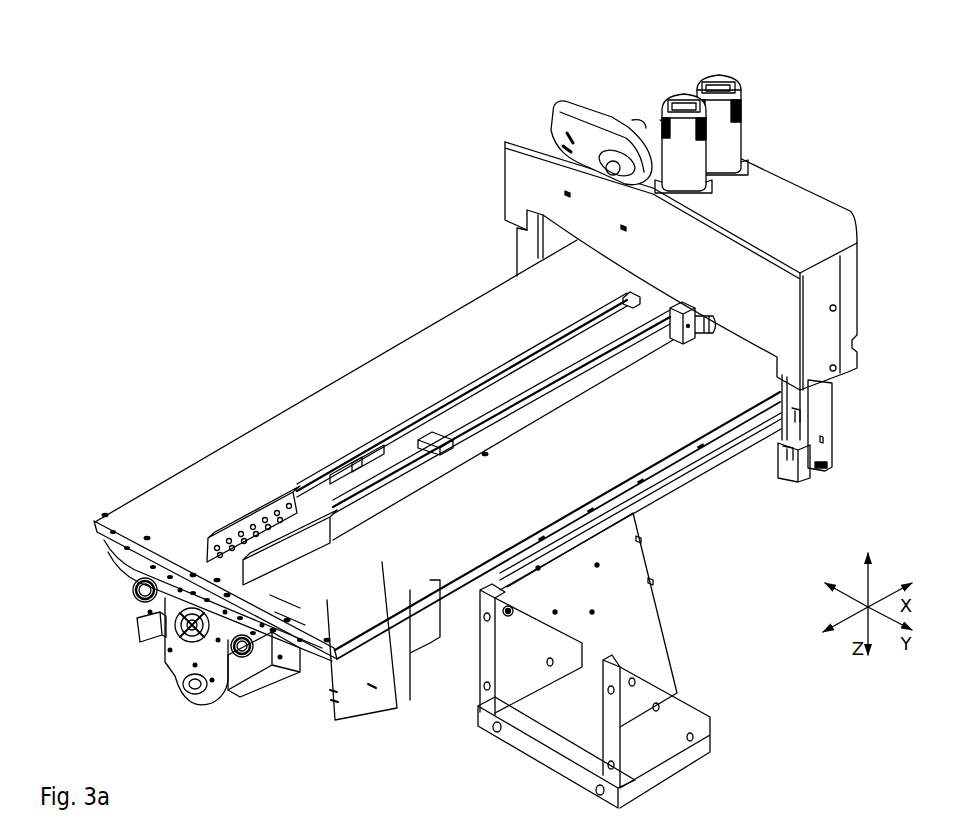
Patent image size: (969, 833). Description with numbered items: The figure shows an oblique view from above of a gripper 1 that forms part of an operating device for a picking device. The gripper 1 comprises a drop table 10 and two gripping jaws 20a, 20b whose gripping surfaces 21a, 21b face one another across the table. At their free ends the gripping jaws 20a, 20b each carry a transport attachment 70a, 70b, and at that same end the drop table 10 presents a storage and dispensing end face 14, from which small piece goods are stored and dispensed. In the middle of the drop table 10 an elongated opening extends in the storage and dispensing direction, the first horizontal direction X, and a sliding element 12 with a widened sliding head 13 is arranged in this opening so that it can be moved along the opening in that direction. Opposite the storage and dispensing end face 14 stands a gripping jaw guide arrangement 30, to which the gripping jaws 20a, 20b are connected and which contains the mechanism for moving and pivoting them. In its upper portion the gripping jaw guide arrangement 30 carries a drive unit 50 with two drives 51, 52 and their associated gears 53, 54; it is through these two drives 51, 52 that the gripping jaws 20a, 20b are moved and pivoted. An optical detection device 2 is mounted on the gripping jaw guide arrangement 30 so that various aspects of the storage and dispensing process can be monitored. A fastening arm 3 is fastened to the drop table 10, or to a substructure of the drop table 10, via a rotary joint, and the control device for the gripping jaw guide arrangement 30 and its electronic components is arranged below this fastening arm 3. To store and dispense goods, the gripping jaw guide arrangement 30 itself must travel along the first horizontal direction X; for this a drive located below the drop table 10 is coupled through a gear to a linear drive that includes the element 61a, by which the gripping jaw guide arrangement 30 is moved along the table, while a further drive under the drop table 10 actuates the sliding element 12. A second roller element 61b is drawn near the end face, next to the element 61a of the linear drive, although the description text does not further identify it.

The gripper 1 is at (423, 173).
The optical detection device 2 is at (607, 123).
The fastening arm 3 is at (627, 607).
The drop table 10 is at (510, 310).
The sliding element 12 is at (537, 388).
The sliding head 13 is at (432, 432).
The storage and dispensing end face 14 is at (172, 670).
The gripping jaw 20a is at (283, 503).
The gripping jaw 20b is at (360, 510).
The gripping surface 21a is at (347, 460).
The gripping surface 21b is at (367, 457).
The gripping jaw guide arrangement 30 is at (822, 244).
The drive unit 50 is at (732, 103).
The drive 51 is at (713, 80).
The drive 52 is at (713, 107).
The gear 53 is at (713, 142).
The gear 54 is at (680, 167).
The linear drive 61a is at (140, 595).
The second roller 61b is at (217, 670).
The transport attachment 70a is at (280, 500).
The transport attachment 70b is at (291, 555).